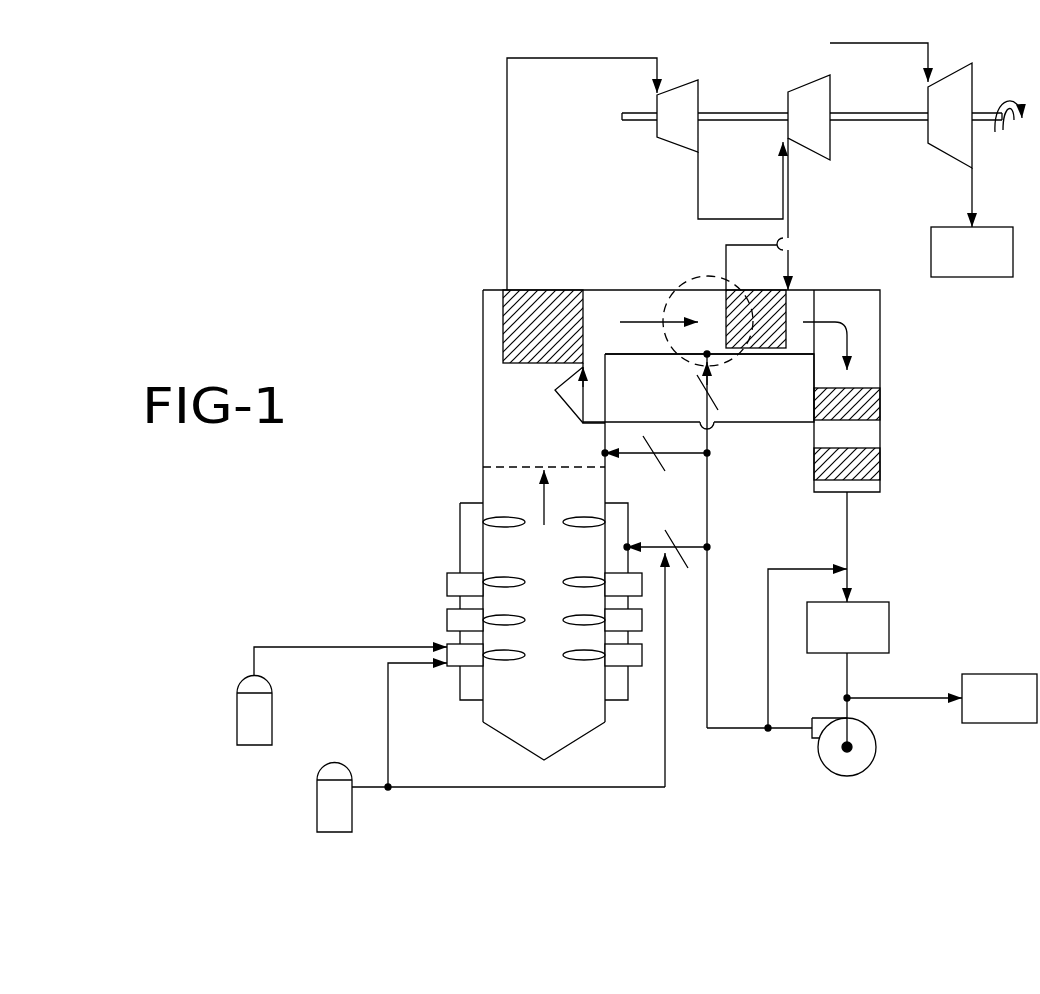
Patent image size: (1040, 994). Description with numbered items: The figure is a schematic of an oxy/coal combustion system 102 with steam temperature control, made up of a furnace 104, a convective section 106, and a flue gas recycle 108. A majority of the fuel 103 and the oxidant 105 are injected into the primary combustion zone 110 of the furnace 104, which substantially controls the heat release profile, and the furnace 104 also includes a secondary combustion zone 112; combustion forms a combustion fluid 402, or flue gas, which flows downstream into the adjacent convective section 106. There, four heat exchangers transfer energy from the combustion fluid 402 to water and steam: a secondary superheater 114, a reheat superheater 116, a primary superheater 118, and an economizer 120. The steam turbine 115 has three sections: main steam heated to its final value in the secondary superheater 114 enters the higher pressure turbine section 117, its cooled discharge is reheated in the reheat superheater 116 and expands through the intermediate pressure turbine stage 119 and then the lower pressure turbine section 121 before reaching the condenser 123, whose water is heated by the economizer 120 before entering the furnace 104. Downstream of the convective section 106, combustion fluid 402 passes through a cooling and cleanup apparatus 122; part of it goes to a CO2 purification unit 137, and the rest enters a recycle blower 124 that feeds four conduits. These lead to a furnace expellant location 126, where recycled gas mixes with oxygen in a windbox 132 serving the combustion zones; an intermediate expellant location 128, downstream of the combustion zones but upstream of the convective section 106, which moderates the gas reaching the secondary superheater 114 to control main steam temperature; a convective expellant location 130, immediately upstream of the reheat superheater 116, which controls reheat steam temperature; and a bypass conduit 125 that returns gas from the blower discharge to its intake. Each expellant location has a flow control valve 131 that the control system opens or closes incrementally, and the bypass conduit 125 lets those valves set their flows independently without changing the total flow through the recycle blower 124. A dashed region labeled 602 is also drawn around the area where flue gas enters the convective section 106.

The oxy/coal combustion system 102 is at (305, 225).
The fuel 103 is at (237, 715).
The furnace 104 is at (513, 690).
The oxidant 105 is at (317, 803).
The convective section 106 is at (603, 322).
The flue gas recycle 108 is at (730, 742).
The primary combustion zone 110 is at (578, 672).
The secondary combustion zone 112 is at (512, 537).
The secondary superheater 114 is at (527, 332).
The steam turbine 115 is at (650, 45).
The reheat superheater 116 is at (725, 318).
The higher pressure turbine section 117 is at (678, 133).
The primary superheater 118 is at (862, 405).
The intermediate pressure turbine stage 119 is at (817, 133).
The economizer 120 is at (862, 465).
The lower pressure turbine section 121 is at (947, 133).
The cooling and cleanup apparatus 122 is at (848, 619).
The condenser 123 is at (972, 252).
The recycle blower 124 is at (857, 762).
The bypass conduit 125 is at (768, 688).
The furnace expellant location 126 is at (627, 547).
The intermediate expellant location 128 is at (605, 453).
The convective expellant location 130 is at (707, 356).
The flow control valve 131 is at (715, 385).
The windbox 132 is at (615, 512).
The CO2 purification unit 137 is at (940, 698).
The combustion fluid 402 is at (622, 330).
The mixing zone 602 is at (680, 292).